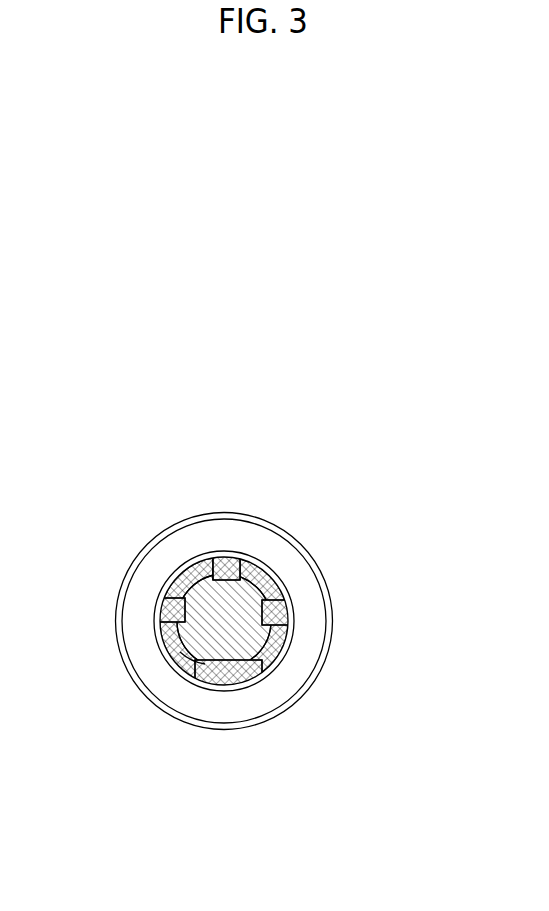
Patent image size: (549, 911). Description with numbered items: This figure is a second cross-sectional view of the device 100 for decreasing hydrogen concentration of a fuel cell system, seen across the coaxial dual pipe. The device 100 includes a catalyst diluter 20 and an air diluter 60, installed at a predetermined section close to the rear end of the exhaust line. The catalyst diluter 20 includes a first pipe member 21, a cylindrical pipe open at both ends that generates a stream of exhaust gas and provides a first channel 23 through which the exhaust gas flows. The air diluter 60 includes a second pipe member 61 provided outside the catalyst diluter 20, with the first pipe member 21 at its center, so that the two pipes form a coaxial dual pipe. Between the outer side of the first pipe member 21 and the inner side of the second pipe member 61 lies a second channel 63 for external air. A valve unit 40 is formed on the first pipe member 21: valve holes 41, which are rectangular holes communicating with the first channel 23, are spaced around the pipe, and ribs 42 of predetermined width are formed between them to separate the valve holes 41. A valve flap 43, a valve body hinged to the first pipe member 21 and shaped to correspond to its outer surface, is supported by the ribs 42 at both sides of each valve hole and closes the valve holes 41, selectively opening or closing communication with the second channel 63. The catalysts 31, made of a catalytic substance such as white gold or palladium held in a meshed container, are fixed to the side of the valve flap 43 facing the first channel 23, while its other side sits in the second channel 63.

The device 100 is at (123, 429).
The catalyst diluter 20 is at (287, 602).
The first pipe member 21 is at (372, 622).
The first channel 23 is at (200, 647).
The catalysts 31 is at (226, 560).
The valve unit 40 is at (272, 588).
The valve holes 41 is at (167, 610).
The ribs 42 is at (228, 675).
The valve flap 43 is at (279, 612).
The air diluter 60 is at (185, 621).
The second pipe member 61 is at (117, 605).
The second channel 63 is at (166, 576).